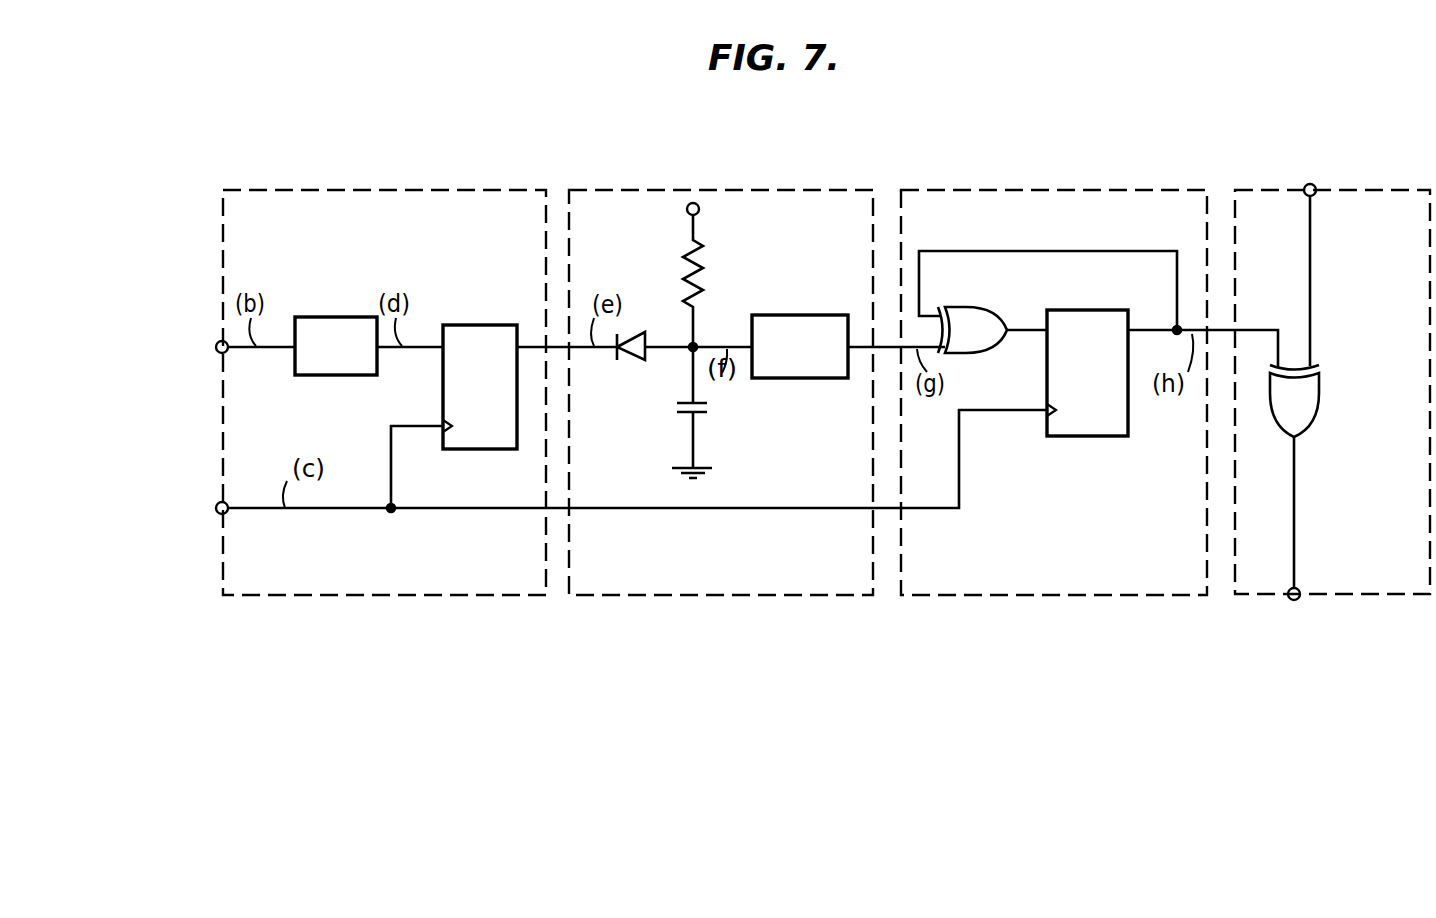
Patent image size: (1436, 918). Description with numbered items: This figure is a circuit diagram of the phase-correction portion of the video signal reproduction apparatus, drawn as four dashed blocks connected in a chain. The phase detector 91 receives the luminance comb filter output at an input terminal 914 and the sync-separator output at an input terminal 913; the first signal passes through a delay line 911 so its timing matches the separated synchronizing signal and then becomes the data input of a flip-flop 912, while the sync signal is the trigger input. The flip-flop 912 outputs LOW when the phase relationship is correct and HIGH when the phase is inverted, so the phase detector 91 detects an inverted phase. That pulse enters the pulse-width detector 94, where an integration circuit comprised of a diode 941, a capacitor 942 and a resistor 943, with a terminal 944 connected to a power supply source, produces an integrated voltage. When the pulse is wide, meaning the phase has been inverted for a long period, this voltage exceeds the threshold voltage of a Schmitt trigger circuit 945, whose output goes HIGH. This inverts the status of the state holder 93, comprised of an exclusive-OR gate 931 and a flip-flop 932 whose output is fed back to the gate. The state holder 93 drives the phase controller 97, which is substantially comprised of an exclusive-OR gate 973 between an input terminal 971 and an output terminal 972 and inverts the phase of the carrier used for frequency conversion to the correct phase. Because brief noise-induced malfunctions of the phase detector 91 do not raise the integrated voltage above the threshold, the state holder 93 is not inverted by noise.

The phase detector 91 is at (278, 190).
The delay line 911 is at (343, 317).
The flip-flop 912 is at (471, 325).
The input terminal 913 is at (216, 513).
The input terminal 914 is at (217, 344).
The state holder 93 is at (1108, 190).
The exclusive-OR gate 931 is at (979, 309).
The flip-flop 932 is at (1075, 437).
The pulse-width detector 94 is at (872, 188).
The diode 941 is at (631, 360).
The capacitor 942 is at (710, 407).
The resistor 943 is at (705, 262).
The terminal 944 is at (700, 209).
The Schmitt trigger circuit 945 is at (805, 315).
The phase controller 97 is at (1430, 190).
The input terminal 971 is at (1310, 184).
The output terminal 972 is at (1294, 600).
The exclusive-OR gate 973 is at (1320, 384).